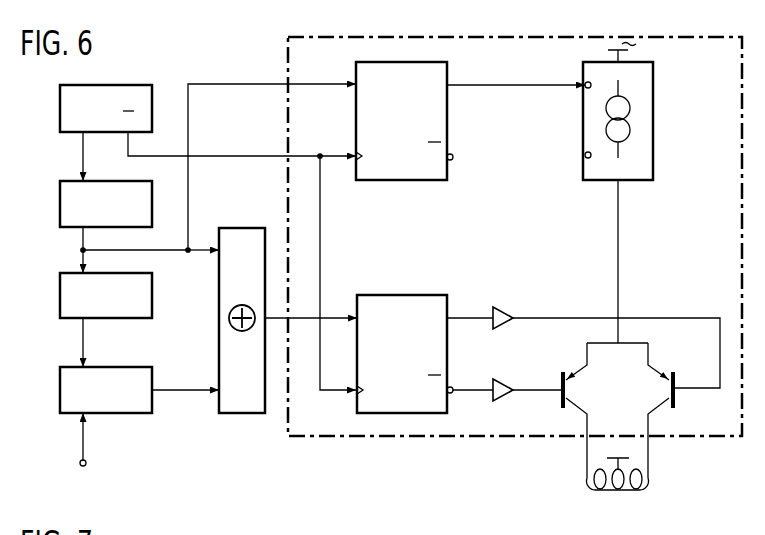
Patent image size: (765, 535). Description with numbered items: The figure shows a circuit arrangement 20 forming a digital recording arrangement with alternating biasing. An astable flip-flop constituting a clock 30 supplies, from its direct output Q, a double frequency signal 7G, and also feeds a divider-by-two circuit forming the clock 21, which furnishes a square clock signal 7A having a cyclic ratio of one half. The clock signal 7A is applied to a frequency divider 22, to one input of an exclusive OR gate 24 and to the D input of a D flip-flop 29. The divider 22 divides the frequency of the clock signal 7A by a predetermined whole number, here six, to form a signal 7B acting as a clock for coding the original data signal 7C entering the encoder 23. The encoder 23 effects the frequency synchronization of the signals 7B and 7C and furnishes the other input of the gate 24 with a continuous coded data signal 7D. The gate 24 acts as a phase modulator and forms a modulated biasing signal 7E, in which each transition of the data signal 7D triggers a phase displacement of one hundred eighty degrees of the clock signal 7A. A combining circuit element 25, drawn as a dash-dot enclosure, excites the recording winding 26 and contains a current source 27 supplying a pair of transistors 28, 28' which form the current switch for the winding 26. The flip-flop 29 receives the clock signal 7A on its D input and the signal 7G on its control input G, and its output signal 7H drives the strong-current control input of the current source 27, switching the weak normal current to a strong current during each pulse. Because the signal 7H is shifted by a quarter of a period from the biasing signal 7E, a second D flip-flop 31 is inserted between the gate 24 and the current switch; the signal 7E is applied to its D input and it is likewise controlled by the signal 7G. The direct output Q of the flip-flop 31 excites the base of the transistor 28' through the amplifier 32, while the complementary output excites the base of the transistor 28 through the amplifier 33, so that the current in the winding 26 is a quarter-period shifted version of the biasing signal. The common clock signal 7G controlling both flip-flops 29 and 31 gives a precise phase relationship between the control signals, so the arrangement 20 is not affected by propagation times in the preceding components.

The circuit arrangement 20 is at (170, 83).
The clock 21 is at (60, 193).
The frequency divider 22 is at (60, 288).
The encoder 23 is at (60, 380).
The exclusive OR gate 24 is at (246, 414).
The combining circuit element 25 is at (481, 438).
The recording winding 26 is at (626, 491).
The current source 27 is at (583, 125).
The transistor 28 is at (604, 410).
The transistor 28' is at (651, 410).
The D flip-flop 29 is at (448, 121).
The clock 30 is at (60, 100).
The D flip-flop 31 is at (448, 353).
The amplifier 32 is at (503, 330).
The amplifier 33 is at (500, 379).
The clock signal 7A is at (206, 178).
The coding clock signal 7B is at (70, 342).
The original data signal 7C is at (71, 439).
The coded data signal 7D is at (185, 377).
The modulated biasing signal 7E is at (311, 309).
The double frequency signal 7G is at (242, 261).
The strong current control signal 7H is at (516, 72).